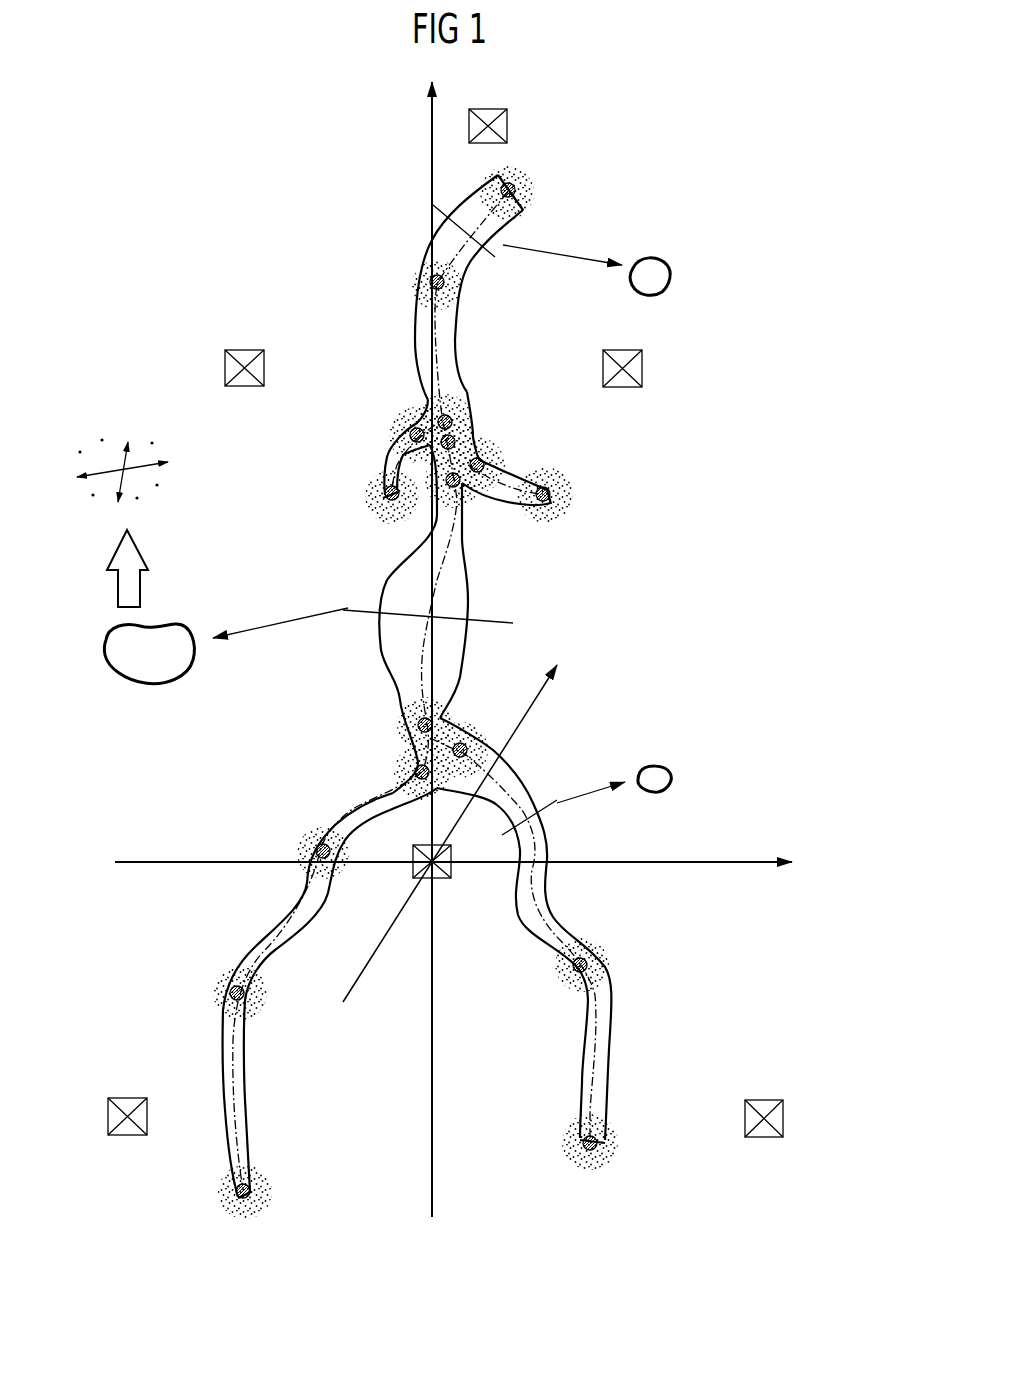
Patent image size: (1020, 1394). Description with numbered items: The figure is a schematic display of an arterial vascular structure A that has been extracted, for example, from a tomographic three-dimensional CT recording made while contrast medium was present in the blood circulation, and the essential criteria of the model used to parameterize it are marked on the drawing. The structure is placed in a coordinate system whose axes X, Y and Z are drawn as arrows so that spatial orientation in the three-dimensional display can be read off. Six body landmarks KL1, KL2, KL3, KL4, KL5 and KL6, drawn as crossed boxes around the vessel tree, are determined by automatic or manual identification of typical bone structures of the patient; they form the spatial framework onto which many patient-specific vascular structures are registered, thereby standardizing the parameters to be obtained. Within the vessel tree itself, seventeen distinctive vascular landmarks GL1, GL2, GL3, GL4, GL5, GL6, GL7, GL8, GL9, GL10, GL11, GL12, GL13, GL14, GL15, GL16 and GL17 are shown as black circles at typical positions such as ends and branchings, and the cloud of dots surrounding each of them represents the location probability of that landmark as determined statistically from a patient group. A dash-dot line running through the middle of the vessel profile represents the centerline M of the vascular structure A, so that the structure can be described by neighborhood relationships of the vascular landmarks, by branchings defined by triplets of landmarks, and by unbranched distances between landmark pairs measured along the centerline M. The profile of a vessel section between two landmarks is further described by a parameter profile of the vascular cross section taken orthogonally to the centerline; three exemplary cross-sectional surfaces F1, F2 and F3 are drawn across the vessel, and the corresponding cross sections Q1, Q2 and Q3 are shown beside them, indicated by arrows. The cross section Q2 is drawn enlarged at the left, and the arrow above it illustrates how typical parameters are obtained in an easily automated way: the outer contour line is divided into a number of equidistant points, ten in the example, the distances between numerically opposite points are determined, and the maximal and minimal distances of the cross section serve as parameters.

The arterial vascular structure A is at (228, 227).
The centerline M is at (433, 588).
The cross-sectional surface F1 is at (493, 262).
The cross-sectional surface F2 is at (358, 610).
The cross-sectional surface F3 is at (543, 805).
The cross section Q1 is at (670, 273).
The cross section Q2 is at (112, 673).
The cross section Q3 is at (663, 767).
The X coordinate axis X is at (454, 880).
The Y coordinate axis Y is at (419, 647).
The Z coordinate axis Z is at (459, 833).
The vascular landmark GL1 is at (515, 185).
The vascular landmark GL2 is at (435, 281).
The vascular landmark GL3 is at (410, 434).
The vascular landmark GL4 is at (450, 417).
The vascular landmark GL5 is at (455, 440).
The vascular landmark GL6 is at (480, 462).
The vascular landmark GL7 is at (549, 492).
The vascular landmark GL8 is at (460, 485).
The vascular landmark GL9 is at (385, 495).
The vascular landmark GL10 is at (417, 723).
The vascular landmark GL11 is at (467, 745).
The vascular landmark GL12 is at (413, 772).
The vascular landmark GL13 is at (317, 847).
The vascular landmark GL14 is at (230, 992).
The vascular landmark GL15 is at (253, 1188).
The vascular landmark GL16 is at (593, 963).
The vascular landmark GL17 is at (583, 1142).
The body landmark KL1 is at (508, 116).
The body landmark KL2 is at (265, 358).
The body landmark KL3 is at (643, 358).
The body landmark KL4 is at (451, 876).
The body landmark KL5 is at (147, 1111).
The body landmark KL6 is at (783, 1107).